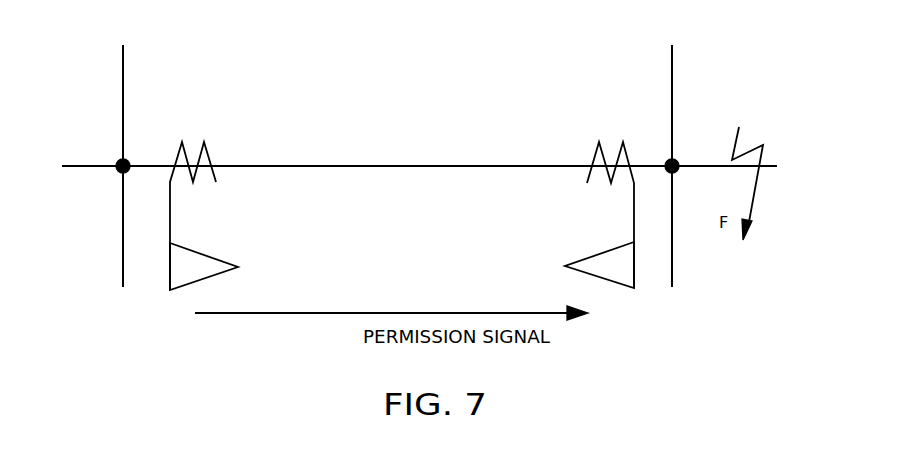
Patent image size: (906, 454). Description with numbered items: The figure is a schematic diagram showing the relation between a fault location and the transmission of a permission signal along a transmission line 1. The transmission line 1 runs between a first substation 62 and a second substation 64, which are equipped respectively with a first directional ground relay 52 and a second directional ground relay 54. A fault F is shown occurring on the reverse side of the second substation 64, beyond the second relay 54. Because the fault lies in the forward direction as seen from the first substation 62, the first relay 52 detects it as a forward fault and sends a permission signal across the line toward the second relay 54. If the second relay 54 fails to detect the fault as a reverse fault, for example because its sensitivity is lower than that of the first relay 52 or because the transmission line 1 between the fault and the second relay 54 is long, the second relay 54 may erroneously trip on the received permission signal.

The transmission line 1 is at (397, 166).
The first directional ground relay 52 is at (217, 257).
The second directional ground relay 54 is at (602, 253).
The first substation 62 is at (123, 83).
The second substation 64 is at (672, 90).